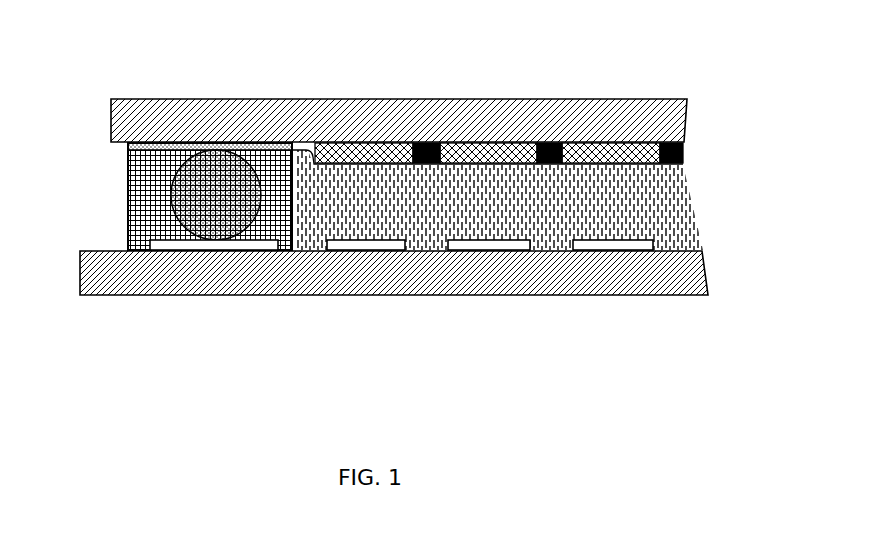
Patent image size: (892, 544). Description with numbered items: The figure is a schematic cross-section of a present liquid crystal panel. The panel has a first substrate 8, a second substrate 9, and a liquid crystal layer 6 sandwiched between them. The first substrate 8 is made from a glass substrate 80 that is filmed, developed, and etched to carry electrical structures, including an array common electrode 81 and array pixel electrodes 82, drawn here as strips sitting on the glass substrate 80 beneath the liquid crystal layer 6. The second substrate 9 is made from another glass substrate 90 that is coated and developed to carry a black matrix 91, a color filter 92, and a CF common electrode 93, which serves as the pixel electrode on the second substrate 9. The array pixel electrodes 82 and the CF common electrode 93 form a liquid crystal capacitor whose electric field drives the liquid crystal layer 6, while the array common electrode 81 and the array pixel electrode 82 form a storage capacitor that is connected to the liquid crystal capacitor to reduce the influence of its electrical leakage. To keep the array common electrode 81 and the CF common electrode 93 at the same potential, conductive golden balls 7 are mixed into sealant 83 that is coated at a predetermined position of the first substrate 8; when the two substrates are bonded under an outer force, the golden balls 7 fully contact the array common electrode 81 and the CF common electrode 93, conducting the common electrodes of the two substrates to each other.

The liquid crystal layer 6 is at (522, 181).
The conductive golden balls 7 is at (397, 99).
The first substrate 8 is at (389, 244).
The second substrate 9 is at (397, 82).
The glass substrate 80 is at (391, 307).
The array common electrode 81 is at (214, 256).
The array pixel electrodes 82 is at (490, 301).
The sealant 83 is at (162, 169).
The glass substrate 90 is at (397, 90).
The black matrix 91 is at (548, 100).
The color filter 92 is at (487, 100).
The CF common electrode 93 is at (210, 94).